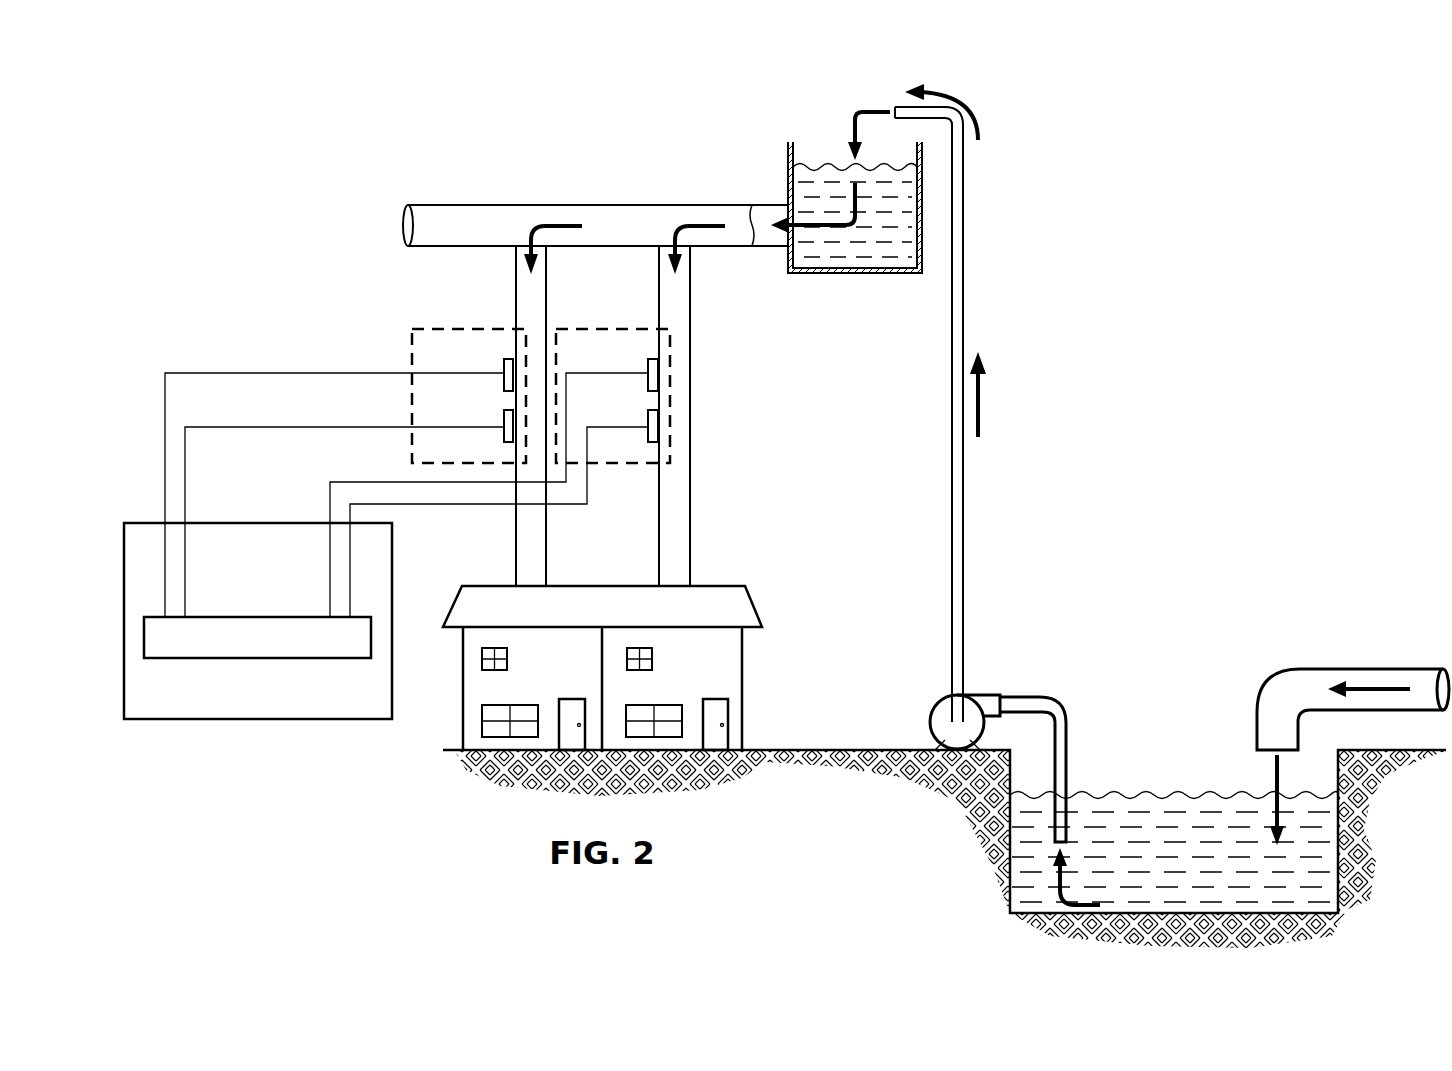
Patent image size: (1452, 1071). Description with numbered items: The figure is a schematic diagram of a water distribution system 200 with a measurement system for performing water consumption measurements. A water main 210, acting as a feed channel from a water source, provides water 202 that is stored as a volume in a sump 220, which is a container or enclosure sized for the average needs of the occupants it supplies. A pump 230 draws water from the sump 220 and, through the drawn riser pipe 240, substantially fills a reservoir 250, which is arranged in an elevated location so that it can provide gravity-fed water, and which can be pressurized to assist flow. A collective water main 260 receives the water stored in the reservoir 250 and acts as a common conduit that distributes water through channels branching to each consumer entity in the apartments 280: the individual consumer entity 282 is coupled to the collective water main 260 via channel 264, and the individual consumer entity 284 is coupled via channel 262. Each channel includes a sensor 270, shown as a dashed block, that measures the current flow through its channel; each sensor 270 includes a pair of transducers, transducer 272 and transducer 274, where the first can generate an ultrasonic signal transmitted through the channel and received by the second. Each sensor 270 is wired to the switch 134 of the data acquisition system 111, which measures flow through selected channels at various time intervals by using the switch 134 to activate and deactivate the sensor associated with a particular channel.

The water distribution system 200 is at (1244, 240).
The water 202 is at (1185, 803).
The water main 210 is at (1373, 669).
The sump 220 is at (1342, 830).
The pump 230 is at (933, 722).
The riser pipe 240 is at (952, 410).
The reservoir 250 is at (850, 273).
The collective water main 260 is at (613, 205).
The channel 262 is at (690, 400).
The channel 264 is at (516, 523).
The sensor 270 is at (470, 318).
The transducer 272 is at (504, 365).
The transducer 274 is at (504, 418).
The apartments 280 is at (666, 668).
The individual consumer entity 282 is at (535, 675).
The individual consumer entity 284 is at (673, 675).
The data acquisition system 111 is at (257, 523).
The switch 134 is at (257, 658).